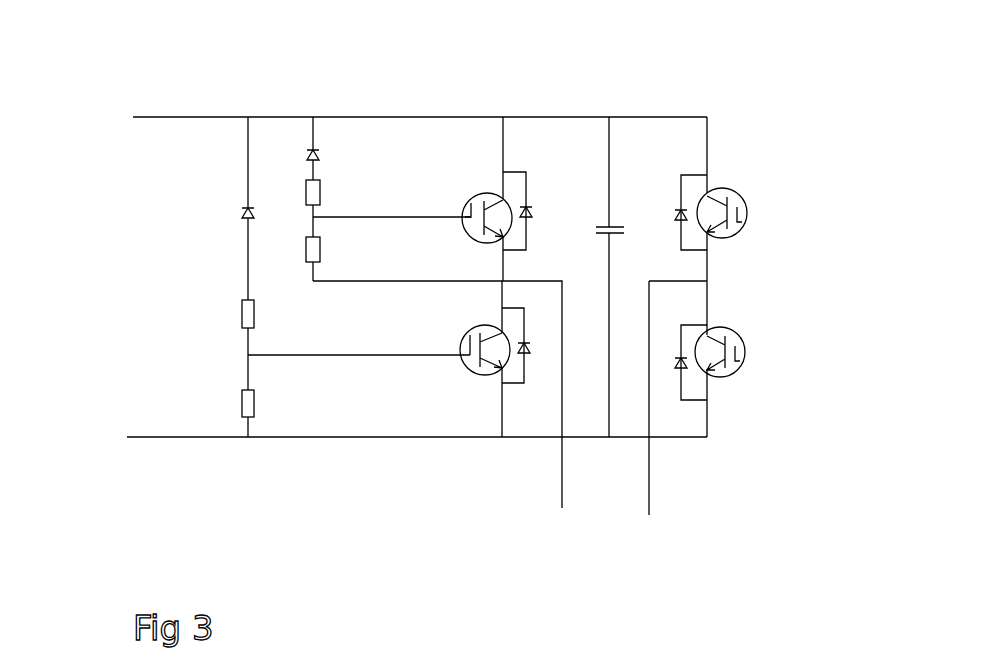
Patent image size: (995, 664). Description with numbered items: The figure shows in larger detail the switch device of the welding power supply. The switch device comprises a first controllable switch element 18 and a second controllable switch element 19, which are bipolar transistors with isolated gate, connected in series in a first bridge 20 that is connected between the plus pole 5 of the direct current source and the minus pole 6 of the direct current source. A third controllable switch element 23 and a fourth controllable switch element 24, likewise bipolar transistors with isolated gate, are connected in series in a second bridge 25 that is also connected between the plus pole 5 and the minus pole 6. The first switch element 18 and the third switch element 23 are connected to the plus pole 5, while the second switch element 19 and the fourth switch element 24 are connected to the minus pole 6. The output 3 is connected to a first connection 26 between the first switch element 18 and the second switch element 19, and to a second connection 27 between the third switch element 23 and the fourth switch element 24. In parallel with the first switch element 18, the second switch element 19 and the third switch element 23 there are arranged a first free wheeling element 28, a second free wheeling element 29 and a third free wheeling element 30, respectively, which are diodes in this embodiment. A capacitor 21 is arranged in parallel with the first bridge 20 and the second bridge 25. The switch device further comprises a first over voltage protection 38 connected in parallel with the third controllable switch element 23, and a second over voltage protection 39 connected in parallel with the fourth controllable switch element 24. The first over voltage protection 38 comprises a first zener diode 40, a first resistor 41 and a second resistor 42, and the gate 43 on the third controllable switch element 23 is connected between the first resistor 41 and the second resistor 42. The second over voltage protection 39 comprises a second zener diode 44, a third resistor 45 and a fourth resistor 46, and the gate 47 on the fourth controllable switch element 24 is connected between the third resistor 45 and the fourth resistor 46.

The output 3 is at (380, 476).
The plus pole 5 is at (147, 117).
The minus pole 6 is at (142, 440).
The first controllable switch element 18 is at (742, 213).
The second controllable switch element 19 is at (745, 350).
The first bridge 20 is at (705, 82).
The capacitor 21 is at (598, 190).
The third controllable switch element 23 is at (468, 204).
The fourth controllable switch element 24 is at (462, 340).
The second bridge 25 is at (507, 89).
The first connection 26 is at (707, 281).
The second connection 27 is at (502, 282).
The first free wheeling element 28 is at (686, 209).
The second free wheeling element 29 is at (697, 368).
The third free wheeling element 30 is at (506, 196).
The first over voltage protection 38 is at (302, 88).
The second over voltage protection 39 is at (252, 463).
The first zener diode 40 is at (312, 152).
The first resistor 41 is at (320, 190).
The second resistor 42 is at (320, 252).
The gate 43 is at (462, 207).
The second zener diode 44 is at (240, 215).
The third resistor 45 is at (242, 314).
The fourth resistor 46 is at (242, 403).
The gate 47 is at (461, 356).